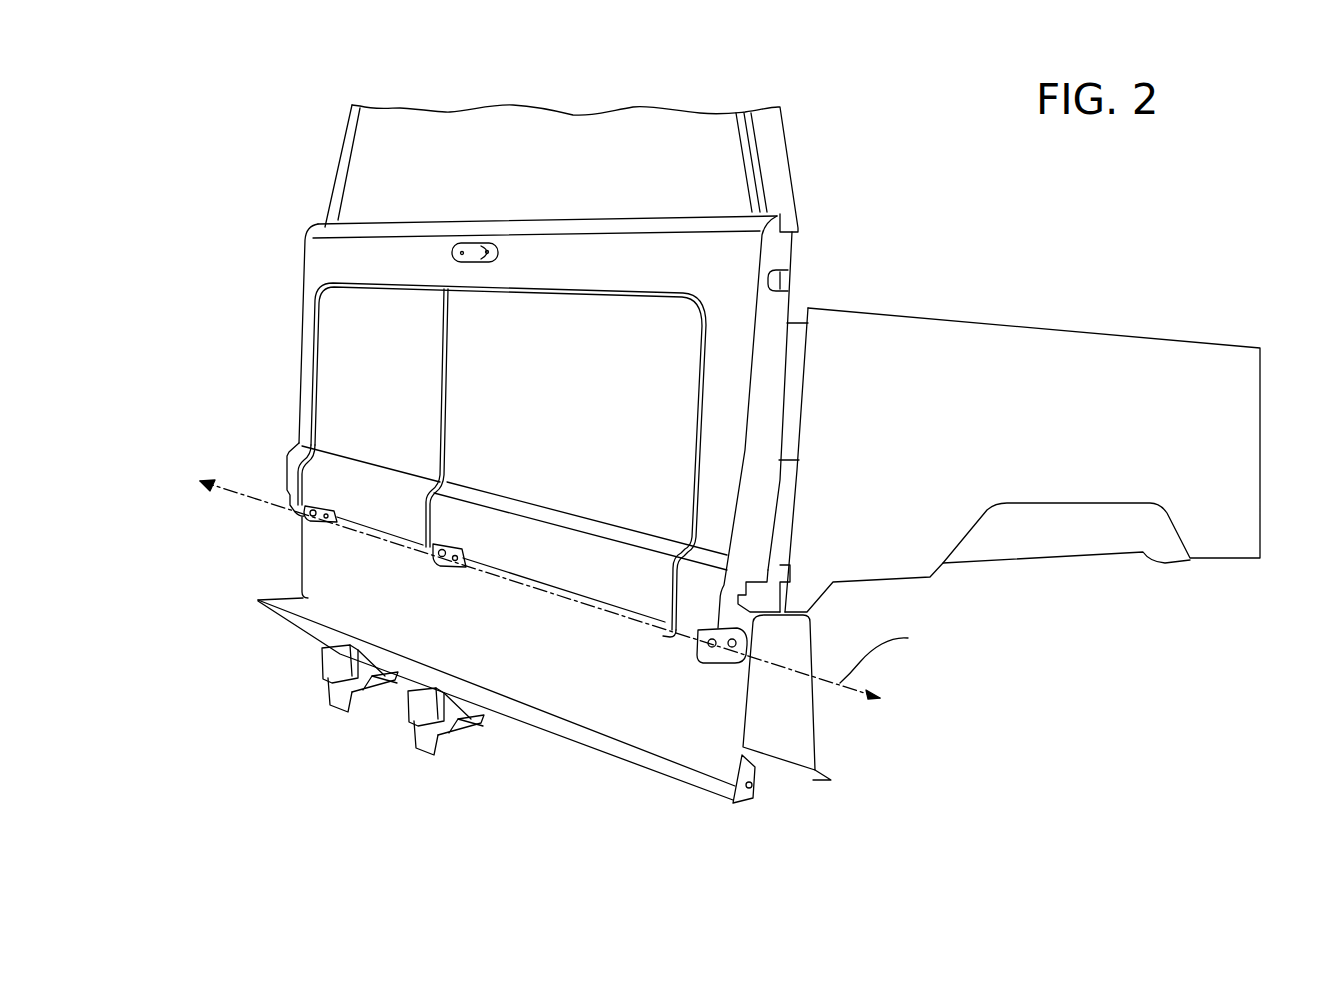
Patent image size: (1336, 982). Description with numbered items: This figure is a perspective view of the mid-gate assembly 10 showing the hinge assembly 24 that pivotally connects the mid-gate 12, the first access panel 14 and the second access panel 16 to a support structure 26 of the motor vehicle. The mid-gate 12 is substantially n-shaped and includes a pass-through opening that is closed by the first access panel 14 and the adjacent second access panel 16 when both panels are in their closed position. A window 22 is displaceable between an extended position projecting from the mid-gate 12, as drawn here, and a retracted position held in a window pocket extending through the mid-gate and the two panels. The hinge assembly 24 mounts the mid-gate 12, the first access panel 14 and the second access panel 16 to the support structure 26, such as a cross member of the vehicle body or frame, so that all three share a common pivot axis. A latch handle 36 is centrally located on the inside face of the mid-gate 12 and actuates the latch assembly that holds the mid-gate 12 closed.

The mid-gate assembly 10 is at (273, 224).
The mid-gate 12 is at (313, 287).
The first access panel 14 is at (593, 423).
The second access panel 16 is at (386, 423).
The window 22 is at (457, 143).
The hinge assembly 24 is at (277, 522).
The support structure 26 is at (603, 700).
The latch handle 36 is at (476, 250).